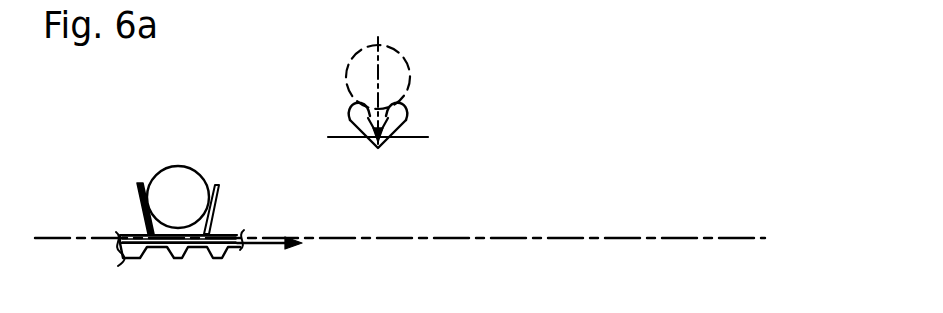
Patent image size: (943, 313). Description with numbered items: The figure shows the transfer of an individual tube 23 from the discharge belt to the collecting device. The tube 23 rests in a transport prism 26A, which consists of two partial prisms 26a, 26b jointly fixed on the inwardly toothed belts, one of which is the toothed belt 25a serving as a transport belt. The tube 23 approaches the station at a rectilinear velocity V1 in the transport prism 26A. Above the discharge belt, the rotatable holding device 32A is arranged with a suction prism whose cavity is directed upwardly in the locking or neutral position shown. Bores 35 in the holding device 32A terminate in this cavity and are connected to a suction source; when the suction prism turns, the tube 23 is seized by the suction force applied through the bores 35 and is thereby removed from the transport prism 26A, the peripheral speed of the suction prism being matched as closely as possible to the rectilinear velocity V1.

The tube 23 is at (404, 62).
The holding device 32A is at (352, 120).
The bores 35 is at (404, 126).
The partial prism 26a is at (207, 230).
The partial prism 26b is at (142, 228).
The transport prism 26A is at (180, 268).
The toothed belt 25a is at (121, 262).
The rectilinear velocity V1 is at (271, 227).